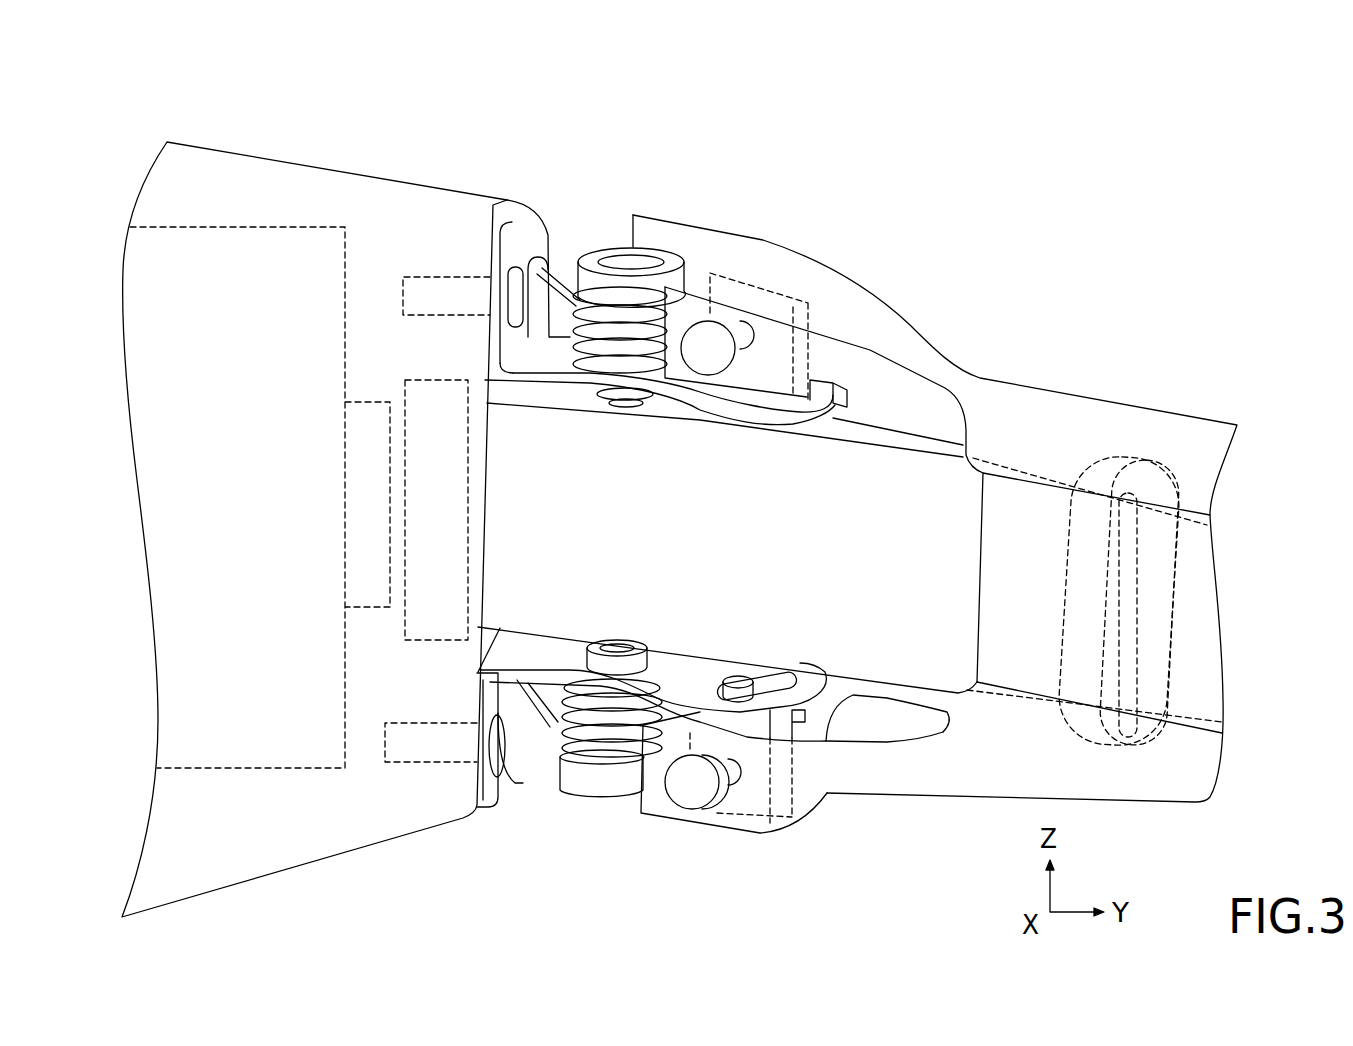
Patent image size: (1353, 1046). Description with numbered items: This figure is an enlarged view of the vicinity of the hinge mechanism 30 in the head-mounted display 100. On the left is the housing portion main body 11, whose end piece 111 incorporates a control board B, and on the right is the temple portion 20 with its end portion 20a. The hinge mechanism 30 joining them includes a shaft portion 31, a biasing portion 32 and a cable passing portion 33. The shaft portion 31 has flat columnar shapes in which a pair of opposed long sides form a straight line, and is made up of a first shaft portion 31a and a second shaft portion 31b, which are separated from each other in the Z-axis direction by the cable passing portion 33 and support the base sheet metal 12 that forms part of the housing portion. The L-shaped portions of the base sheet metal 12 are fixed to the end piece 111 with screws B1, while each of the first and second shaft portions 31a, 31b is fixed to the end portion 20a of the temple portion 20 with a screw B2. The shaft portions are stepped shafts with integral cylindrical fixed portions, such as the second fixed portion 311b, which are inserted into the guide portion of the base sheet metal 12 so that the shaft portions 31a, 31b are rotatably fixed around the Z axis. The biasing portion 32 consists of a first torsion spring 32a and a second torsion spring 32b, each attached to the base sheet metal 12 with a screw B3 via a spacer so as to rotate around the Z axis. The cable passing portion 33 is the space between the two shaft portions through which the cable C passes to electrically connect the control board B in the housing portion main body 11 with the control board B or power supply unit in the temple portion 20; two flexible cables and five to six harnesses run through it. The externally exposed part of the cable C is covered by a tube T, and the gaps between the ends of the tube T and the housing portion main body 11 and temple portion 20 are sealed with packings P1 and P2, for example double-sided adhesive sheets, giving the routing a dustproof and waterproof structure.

The end piece 111 is at (243, 147).
The housing portion main body 11 is at (314, 481).
The base sheet metal 12 is at (512, 362).
The temple portion 20 is at (1022, 383).
The end portion of the temple portion 20a is at (690, 250).
The hinge mechanism 30 is at (762, 176).
The shaft portion 31 is at (748, 546).
The first shaft portion 31a is at (762, 292).
The second shaft portion 31b is at (750, 800).
The second fixed portion 311b is at (740, 695).
The biasing portion 32 is at (582, 527).
The first torsion spring 32a is at (541, 350).
The second torsion spring 32b is at (547, 727).
The cable passing portion 33 is at (633, 536).
The head-mounted display 100 is at (1130, 202).
The control board B is at (273, 755).
The screw B1 is at (458, 293).
The screw B2 is at (710, 335).
The screw B3 is at (655, 275).
The cable C is at (370, 397).
The packing P1 is at (1110, 460).
The packing P2 is at (435, 385).
The tube T is at (931, 445).